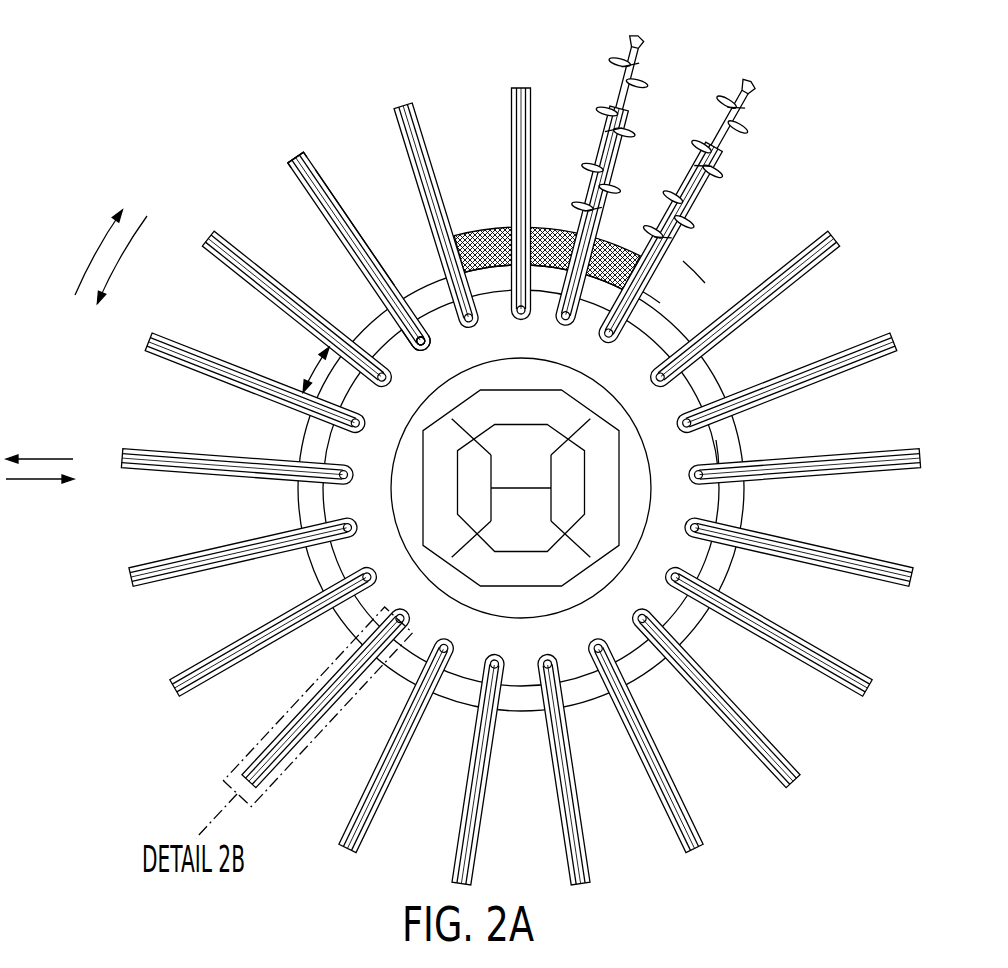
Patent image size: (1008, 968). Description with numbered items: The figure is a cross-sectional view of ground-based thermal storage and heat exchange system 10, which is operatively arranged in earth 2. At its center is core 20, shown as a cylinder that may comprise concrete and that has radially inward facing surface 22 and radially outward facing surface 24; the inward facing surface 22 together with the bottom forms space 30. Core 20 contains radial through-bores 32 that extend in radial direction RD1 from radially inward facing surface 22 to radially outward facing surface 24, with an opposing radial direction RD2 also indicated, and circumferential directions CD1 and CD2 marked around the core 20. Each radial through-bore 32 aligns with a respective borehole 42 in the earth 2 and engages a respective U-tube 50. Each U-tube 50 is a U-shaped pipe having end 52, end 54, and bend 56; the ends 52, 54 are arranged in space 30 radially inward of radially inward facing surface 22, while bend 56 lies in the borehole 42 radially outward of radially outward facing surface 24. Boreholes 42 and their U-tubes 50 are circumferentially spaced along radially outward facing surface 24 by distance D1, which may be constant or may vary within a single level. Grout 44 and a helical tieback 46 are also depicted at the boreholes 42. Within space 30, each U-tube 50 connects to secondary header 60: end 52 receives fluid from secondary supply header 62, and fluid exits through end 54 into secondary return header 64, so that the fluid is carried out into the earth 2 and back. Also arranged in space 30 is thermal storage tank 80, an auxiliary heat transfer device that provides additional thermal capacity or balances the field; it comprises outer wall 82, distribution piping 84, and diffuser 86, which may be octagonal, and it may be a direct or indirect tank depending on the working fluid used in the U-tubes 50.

The earth 2 is at (483, 227).
The ground-based thermal storage and heat exchange system 10 is at (138, 136).
The core 20 is at (709, 383).
The radially inward facing surface 22 is at (684, 334).
The radially outward facing surface 24 is at (676, 323).
The space 30 is at (685, 517).
The radial through-bores 32 is at (392, 325).
The borehole 42 is at (318, 203).
The grout 44 is at (296, 158).
The helical tieback 46 is at (728, 112).
The U-tube 50 is at (332, 203).
The end 52 is at (403, 336).
The end 54 is at (420, 316).
The bend 56 is at (299, 156).
The secondary header 60 is at (441, 354).
The secondary supply header 62 is at (413, 336).
The secondary return header 64 is at (417, 330).
The thermal storage tank 80 is at (531, 512).
The storage tank outer wall 82 is at (717, 450).
The storage tank distribution piping 84 is at (493, 522).
The diffuser 86 is at (679, 637).
The circumferential distance D1 is at (313, 368).
The circumferential direction CD1 is at (97, 242).
The circumferential direction CD2 is at (130, 251).
The radial direction RD1 is at (48, 459).
The radial direction RD2 is at (45, 479).